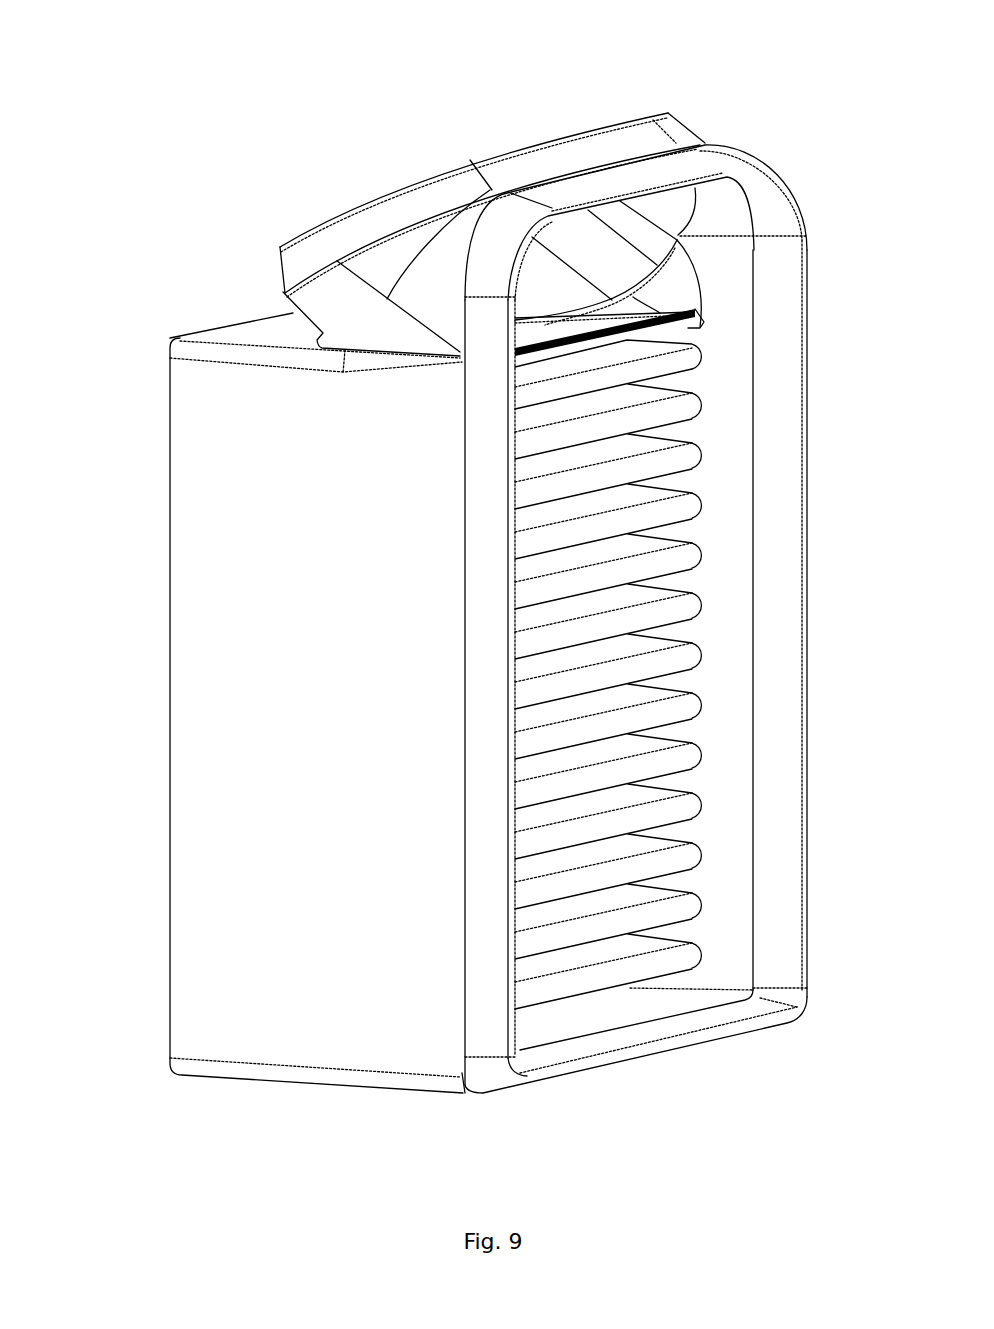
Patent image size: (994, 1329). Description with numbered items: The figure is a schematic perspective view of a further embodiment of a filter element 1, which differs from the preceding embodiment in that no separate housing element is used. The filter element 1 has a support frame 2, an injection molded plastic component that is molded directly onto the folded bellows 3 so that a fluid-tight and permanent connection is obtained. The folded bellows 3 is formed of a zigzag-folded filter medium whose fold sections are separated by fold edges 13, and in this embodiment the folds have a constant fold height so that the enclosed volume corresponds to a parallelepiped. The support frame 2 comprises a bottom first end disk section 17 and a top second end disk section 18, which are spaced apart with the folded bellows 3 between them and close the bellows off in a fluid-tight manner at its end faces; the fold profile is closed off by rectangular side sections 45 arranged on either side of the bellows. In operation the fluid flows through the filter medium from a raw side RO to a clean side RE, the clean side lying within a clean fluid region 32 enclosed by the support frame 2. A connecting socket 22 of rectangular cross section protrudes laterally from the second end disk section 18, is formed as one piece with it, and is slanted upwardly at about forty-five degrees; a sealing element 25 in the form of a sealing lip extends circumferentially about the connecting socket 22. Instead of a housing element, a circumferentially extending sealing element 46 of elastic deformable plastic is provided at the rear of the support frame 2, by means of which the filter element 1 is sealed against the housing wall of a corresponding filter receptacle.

The filter element 1 is at (427, 97).
The support frame 2 is at (187, 326).
The folded bellows 3 is at (712, 603).
The fold edge 13 is at (668, 716).
The first end disk section 17 is at (299, 1083).
The second end disk section 18 is at (247, 338).
The connecting socket 22 is at (377, 257).
The sealing element 25 is at (318, 247).
The clean fluid region 32 is at (716, 770).
The side section 45 is at (200, 771).
The sealing element 46 is at (785, 890).
The clean side RE is at (714, 520).
The raw side RO is at (128, 678).